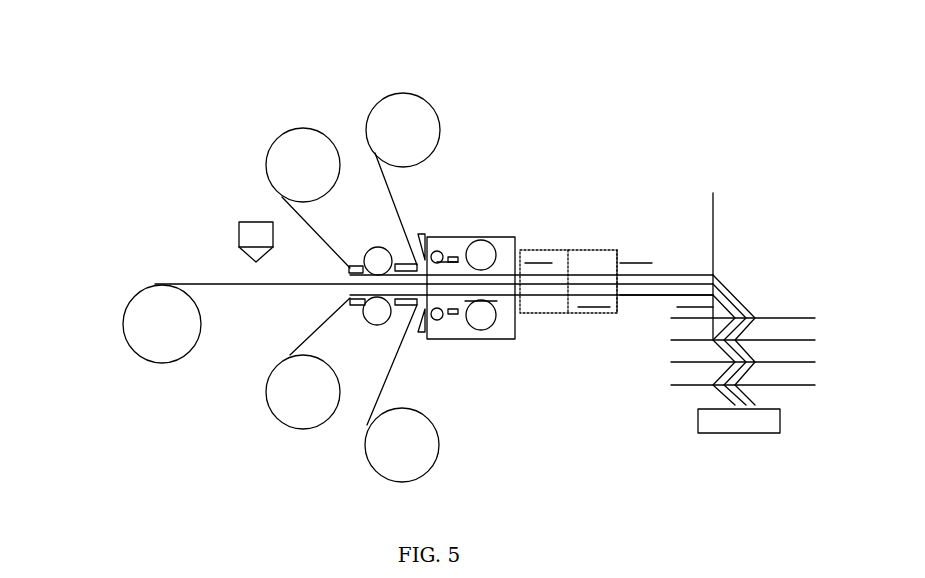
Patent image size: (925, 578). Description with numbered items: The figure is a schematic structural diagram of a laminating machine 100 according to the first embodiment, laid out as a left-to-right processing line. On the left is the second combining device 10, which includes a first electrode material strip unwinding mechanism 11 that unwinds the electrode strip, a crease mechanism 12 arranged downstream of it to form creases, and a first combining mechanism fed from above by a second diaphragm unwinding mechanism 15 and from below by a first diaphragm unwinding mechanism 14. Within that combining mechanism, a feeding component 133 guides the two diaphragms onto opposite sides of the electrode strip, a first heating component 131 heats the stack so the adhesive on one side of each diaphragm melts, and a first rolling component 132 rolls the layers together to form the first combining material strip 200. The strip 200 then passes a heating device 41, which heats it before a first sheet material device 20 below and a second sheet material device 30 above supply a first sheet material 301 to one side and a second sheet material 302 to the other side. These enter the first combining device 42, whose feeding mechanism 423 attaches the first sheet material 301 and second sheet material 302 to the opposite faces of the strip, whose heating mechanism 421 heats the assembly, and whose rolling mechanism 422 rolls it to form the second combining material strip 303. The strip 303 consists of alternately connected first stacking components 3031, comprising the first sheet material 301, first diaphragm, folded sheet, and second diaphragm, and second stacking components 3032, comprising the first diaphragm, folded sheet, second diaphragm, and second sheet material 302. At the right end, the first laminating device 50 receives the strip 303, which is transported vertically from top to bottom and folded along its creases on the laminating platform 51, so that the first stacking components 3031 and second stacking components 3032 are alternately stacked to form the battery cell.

The laminating machine 100 is at (33, 29).
The second combining device 10 is at (150, 162).
The first electrode material strip unwinding mechanism 11 is at (124, 324).
The crease mechanism 12 is at (238, 236).
The first diaphragm unwinding mechanism 14 is at (268, 403).
The second diaphragm unwinding mechanism 15 is at (267, 150).
The first sheet material device 20 is at (473, 425).
The second sheet material device 30 is at (465, 97).
The heating device 41 is at (418, 325).
The first combining device 42 is at (483, 340).
The first heating component 131 is at (357, 266).
The first rolling component 132 is at (378, 247).
The feeding component 133 is at (350, 301).
The first combining material strip 200 is at (648, 296).
The first sheet material 301 is at (595, 308).
The second sheet material 302 is at (542, 262).
The second combining material strip 303 is at (572, 190).
The first stacking component 3031 is at (612, 250).
The second stacking component 3032 is at (540, 313).
The heating mechanism 421 is at (455, 316).
The rolling mechanism 422 is at (491, 242).
The feeding mechanism 423 is at (437, 250).
The first laminating device 50 is at (787, 246).
The laminating platform 51 is at (735, 433).